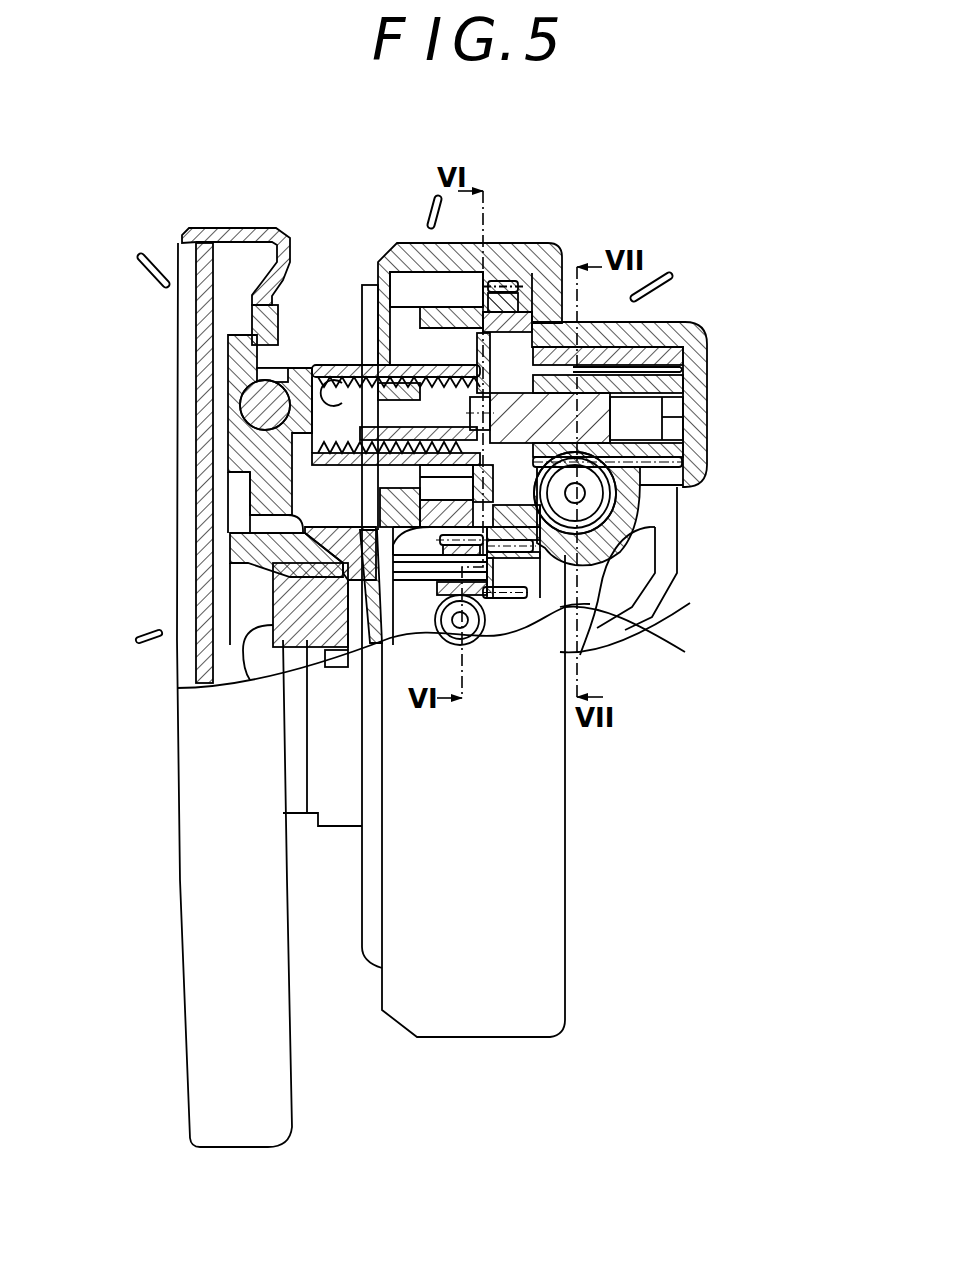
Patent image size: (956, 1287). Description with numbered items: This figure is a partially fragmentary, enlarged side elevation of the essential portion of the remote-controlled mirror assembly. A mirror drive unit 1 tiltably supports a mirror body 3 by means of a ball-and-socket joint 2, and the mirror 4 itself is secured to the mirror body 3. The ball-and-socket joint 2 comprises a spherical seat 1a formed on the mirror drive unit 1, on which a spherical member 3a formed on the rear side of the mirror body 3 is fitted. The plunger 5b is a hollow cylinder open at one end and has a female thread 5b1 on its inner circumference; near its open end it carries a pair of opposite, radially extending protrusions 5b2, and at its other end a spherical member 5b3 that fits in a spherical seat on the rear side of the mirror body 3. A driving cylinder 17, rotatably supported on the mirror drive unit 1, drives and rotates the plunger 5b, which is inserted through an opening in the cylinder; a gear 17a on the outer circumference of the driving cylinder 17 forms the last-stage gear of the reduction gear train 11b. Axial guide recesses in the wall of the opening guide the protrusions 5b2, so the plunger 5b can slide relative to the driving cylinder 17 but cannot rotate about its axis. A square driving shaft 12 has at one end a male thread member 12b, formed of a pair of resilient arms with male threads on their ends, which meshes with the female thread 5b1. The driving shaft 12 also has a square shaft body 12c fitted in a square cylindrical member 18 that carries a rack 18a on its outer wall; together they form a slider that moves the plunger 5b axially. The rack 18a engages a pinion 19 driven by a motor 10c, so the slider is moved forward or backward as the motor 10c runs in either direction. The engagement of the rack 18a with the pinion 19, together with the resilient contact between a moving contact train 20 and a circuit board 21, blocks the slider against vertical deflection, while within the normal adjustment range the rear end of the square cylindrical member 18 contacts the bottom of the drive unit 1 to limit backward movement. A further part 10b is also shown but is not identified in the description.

The mirror drive unit 1 is at (565, 927).
The spherical seat 1a is at (300, 640).
The ball-and-socket joint 2 is at (262, 582).
The mirror body 3 is at (178, 765).
The spherical member 3a is at (262, 515).
The mirror 4 is at (178, 660).
The plunger 5b is at (306, 356).
The female thread 5b1 is at (215, 373).
The protrusions 5b2 is at (505, 382).
The spherical member 5b3 is at (228, 445).
The bracket portion 10b is at (578, 653).
The motor 10c is at (660, 572).
The reduction gear train 11b is at (593, 603).
The square driving shaft 12 is at (480, 275).
The male thread member 12b is at (365, 360).
The square shaft body 12c is at (602, 350).
The driving cylinder 17 is at (548, 312).
The gear 17a is at (510, 280).
The square cylindrical member 18 is at (680, 452).
The rack 18a is at (675, 470).
The pinion 19 is at (622, 470).
The moving contact train 20 is at (632, 374).
The circuit board 21 is at (675, 346).